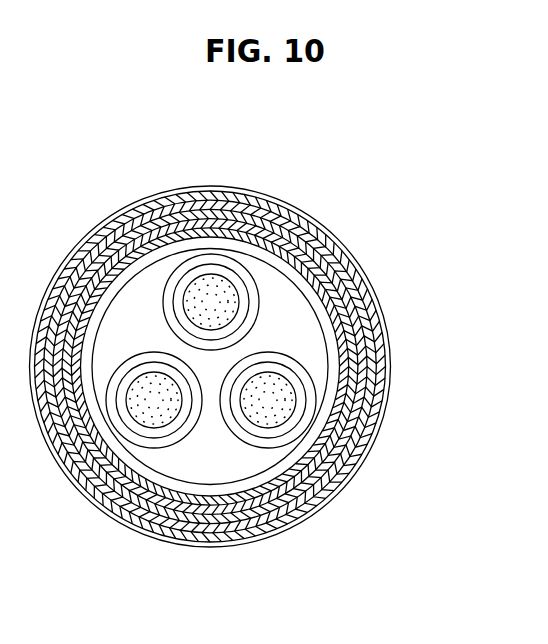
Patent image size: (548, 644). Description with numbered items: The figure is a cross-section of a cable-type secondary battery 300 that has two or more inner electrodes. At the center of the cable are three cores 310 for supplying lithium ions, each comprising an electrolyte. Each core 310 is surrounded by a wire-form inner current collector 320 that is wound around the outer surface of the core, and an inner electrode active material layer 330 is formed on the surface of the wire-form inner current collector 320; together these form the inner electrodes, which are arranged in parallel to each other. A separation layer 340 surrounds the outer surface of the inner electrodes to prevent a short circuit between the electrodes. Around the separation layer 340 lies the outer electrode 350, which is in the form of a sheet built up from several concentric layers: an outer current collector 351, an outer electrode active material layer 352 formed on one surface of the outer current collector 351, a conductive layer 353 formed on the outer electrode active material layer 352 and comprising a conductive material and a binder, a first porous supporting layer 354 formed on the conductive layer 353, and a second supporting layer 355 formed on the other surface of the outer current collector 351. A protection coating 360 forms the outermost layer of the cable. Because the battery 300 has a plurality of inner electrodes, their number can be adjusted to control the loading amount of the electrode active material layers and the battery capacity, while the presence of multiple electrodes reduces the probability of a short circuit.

The cable-type secondary battery 300 is at (128, 138).
The core for supplying lithium ions 310 is at (207, 290).
The wire-form inner current collector 320 is at (245, 275).
The inner electrode active material layer 330 is at (293, 302).
The separation layer 340 is at (305, 283).
The outer electrode 350 is at (256, 366).
The outer current collector 351 is at (373, 385).
The outer electrode active material layer 352 is at (368, 371).
The conductive layer 353 is at (362, 347).
The first supporting layer 354 is at (452, 410).
The second supporting layer 355 is at (380, 400).
The protection coating 360 is at (380, 426).